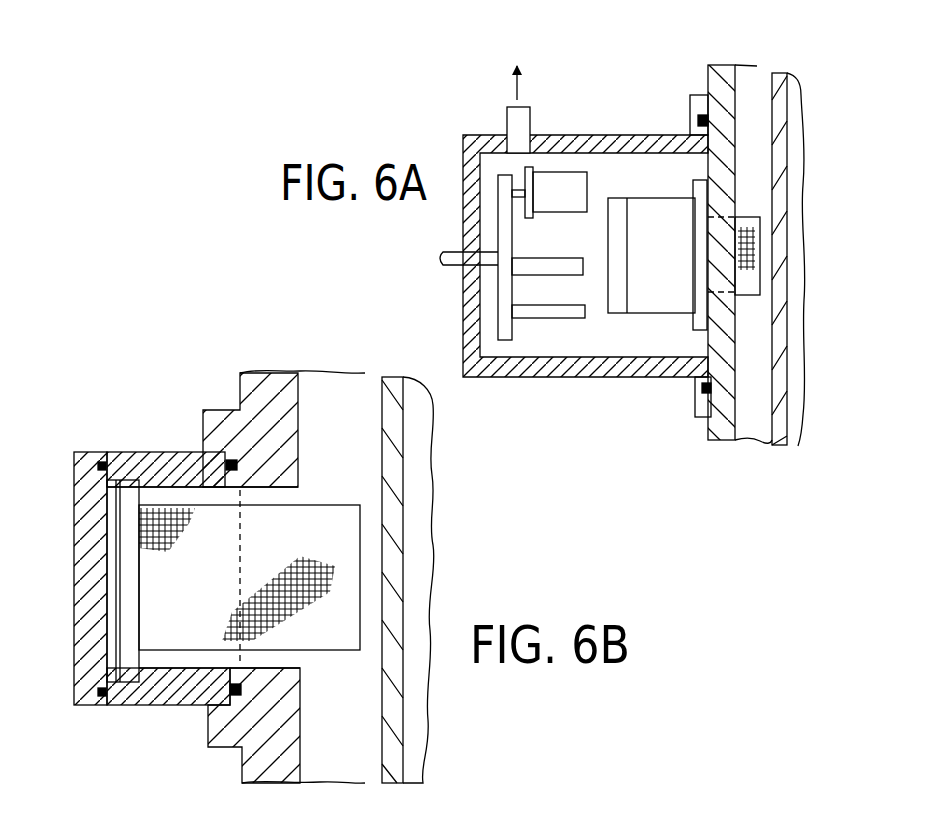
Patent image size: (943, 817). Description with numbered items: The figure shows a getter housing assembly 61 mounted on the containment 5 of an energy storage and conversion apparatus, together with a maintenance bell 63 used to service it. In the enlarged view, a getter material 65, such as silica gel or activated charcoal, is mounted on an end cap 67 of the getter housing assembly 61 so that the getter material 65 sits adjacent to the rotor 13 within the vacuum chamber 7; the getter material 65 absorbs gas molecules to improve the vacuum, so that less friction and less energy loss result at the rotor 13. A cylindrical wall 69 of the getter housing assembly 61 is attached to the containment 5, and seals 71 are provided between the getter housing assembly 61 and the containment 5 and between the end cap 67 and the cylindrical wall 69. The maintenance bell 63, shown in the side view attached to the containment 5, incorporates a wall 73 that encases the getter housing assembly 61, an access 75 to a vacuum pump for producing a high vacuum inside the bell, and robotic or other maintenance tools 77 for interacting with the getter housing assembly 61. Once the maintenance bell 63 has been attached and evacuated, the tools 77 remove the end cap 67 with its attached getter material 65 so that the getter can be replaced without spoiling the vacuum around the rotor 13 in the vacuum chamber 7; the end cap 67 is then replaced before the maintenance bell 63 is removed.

In FIG. 6A, the containment 5 is at (728, 65).
In FIG. 6B, the containment 5 is at (252, 393).
In FIG. 6A, the vacuum chamber 7 is at (750, 87).
In FIG. 6B, the vacuum chamber 7 is at (345, 437).
In FIG. 6A, the rotor 13 is at (783, 430).
In FIG. 6B, the rotor 13 is at (397, 568).
In FIG. 6A, the getter housing assembly 61 is at (651, 190).
In FIG. 6B, the getter housing assembly 61 is at (60, 696).
In FIG. 6A, the maintenance bell 63 is at (640, 382).
In FIG. 6A, the getter material 65 is at (705, 265).
In FIG. 6B, the getter material 65 is at (258, 583).
In FIG. 6B, the end cap 67 is at (80, 600).
In FIG. 6B, the cylindrical wall 69 is at (147, 470).
In FIG. 6B, the seals 71 is at (100, 455).
In FIG. 6A, the wall 73 is at (550, 367).
In FIG. 6A, the access 75 is at (520, 125).
In FIG. 6A, the maintenance tools 77 is at (468, 282).